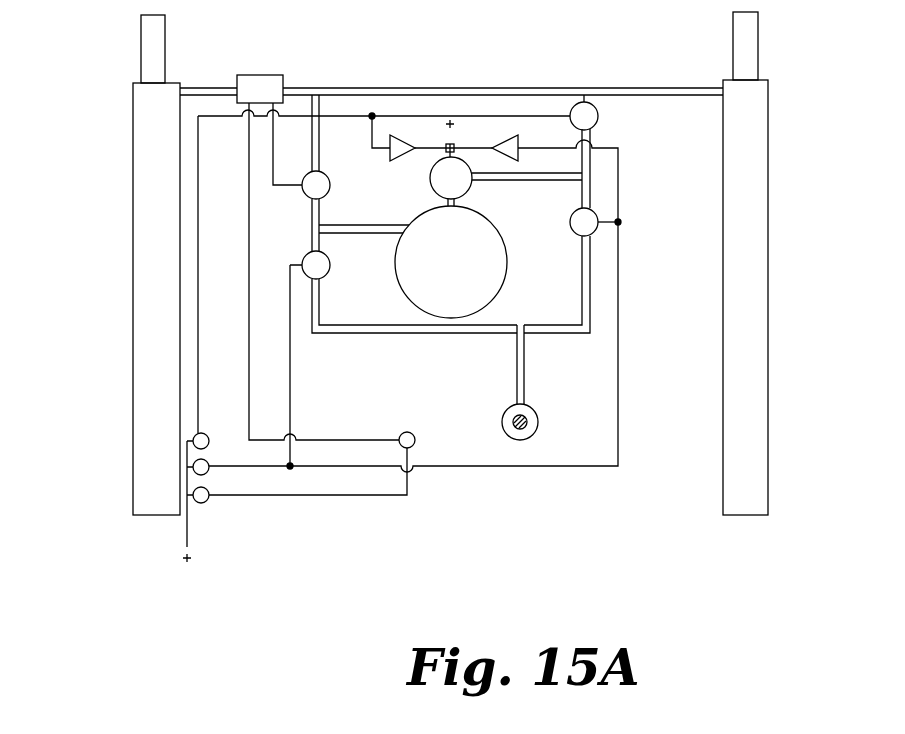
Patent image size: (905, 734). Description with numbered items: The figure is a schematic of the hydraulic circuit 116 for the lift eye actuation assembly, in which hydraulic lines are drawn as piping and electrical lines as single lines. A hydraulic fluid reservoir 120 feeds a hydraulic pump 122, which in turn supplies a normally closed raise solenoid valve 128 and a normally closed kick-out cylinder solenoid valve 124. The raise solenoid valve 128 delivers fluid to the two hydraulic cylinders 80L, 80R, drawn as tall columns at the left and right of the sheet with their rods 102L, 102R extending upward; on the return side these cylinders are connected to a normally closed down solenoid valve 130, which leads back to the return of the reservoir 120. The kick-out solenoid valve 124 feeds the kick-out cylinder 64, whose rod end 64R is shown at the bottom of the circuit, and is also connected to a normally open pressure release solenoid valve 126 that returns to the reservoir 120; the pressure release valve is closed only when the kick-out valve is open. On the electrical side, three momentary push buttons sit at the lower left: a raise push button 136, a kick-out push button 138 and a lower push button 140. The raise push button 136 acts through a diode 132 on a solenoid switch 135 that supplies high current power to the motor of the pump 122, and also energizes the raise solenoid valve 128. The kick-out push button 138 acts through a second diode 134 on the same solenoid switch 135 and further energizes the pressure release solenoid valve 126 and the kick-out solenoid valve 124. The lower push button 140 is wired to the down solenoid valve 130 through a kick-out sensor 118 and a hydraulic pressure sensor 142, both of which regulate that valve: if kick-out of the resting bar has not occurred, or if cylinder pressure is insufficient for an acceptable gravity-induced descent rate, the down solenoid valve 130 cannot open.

The hydraulic cylinder 80L is at (133, 440).
The hydraulic cylinder 80R is at (768, 348).
The left upper post 102L is at (165, 47).
The right upper post 102R is at (733, 48).
The hydraulic pressure sensor 142 is at (283, 75).
The diode 132 is at (397, 136).
The diode 134 is at (503, 135).
The solenoid switch 135 is at (455, 142).
The hydraulic pump 122 is at (430, 170).
The hydraulic fluid reservoir 120 is at (493, 222).
The down solenoid valve 130 is at (330, 183).
The pressure release solenoid valve 126 is at (327, 276).
The kick-out cylinder solenoid valve 124 is at (573, 229).
The raise solenoid valve 128 is at (598, 118).
The kick-out cylinder 64 is at (532, 407).
The cylinder rod 64R is at (513, 420).
The momentary raise push button 136 is at (203, 433).
The momentary kick-out push button 138 is at (193, 469).
The momentary lower push button 140 is at (202, 503).
The kick-out sensor 118 is at (402, 433).
The hydraulic circuit 116 is at (475, 508).